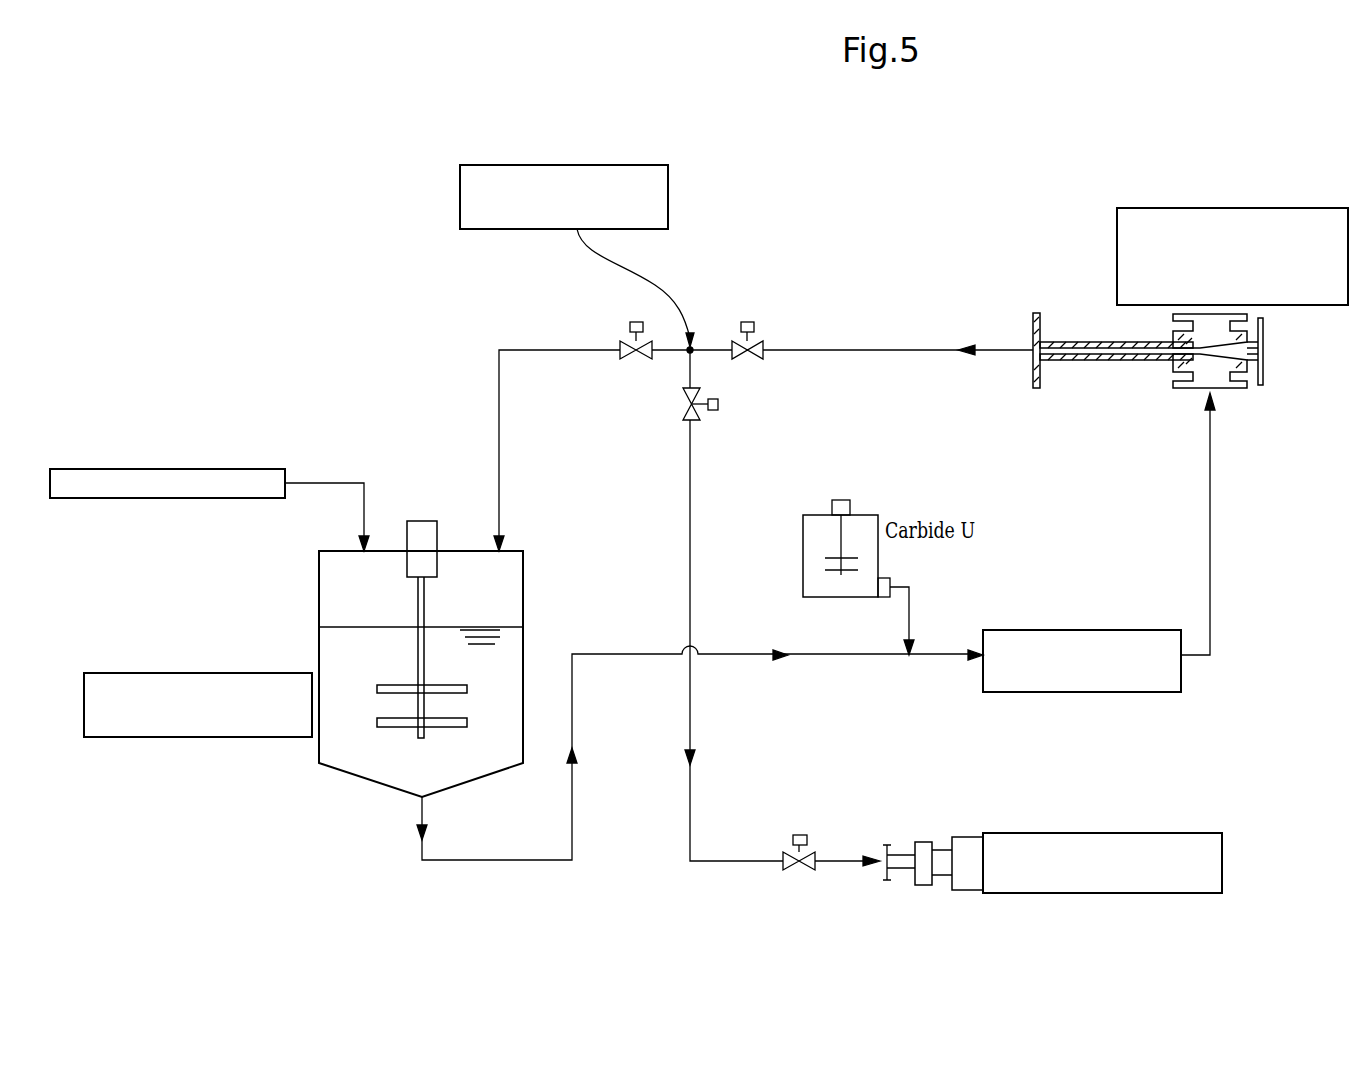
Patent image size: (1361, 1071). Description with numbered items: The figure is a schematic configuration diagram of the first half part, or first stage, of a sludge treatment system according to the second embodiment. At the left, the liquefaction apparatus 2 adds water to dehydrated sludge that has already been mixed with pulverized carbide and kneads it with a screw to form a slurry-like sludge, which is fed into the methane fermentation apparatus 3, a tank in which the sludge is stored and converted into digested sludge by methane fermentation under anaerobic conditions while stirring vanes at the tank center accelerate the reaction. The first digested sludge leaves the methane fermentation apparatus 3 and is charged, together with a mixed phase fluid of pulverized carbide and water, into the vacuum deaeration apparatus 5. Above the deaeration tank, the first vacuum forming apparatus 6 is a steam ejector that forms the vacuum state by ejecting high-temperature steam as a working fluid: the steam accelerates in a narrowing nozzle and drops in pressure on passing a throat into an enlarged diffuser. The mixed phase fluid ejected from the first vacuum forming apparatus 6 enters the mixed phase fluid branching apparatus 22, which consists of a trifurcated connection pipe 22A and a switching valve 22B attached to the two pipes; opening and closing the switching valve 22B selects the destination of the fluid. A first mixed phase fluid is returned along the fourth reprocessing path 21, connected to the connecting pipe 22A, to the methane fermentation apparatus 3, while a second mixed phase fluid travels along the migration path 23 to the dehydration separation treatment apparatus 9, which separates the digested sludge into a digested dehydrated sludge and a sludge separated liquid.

The liquefaction apparatus 2 is at (262, 469).
The methane fermentation apparatus 3 is at (228, 673).
The vacuum deaeration apparatus 5 is at (1100, 630).
The first vacuum forming apparatus 6 is at (1248, 208).
The dehydration separation treatment apparatus 9 is at (1138, 833).
The fourth reprocessing path 21 is at (523, 349).
The mixed phase fluid branching apparatus 22 is at (490, 165).
The connection pipe 22A is at (705, 350).
The switching valve 22B is at (700, 392).
The migration path 23 is at (692, 708).